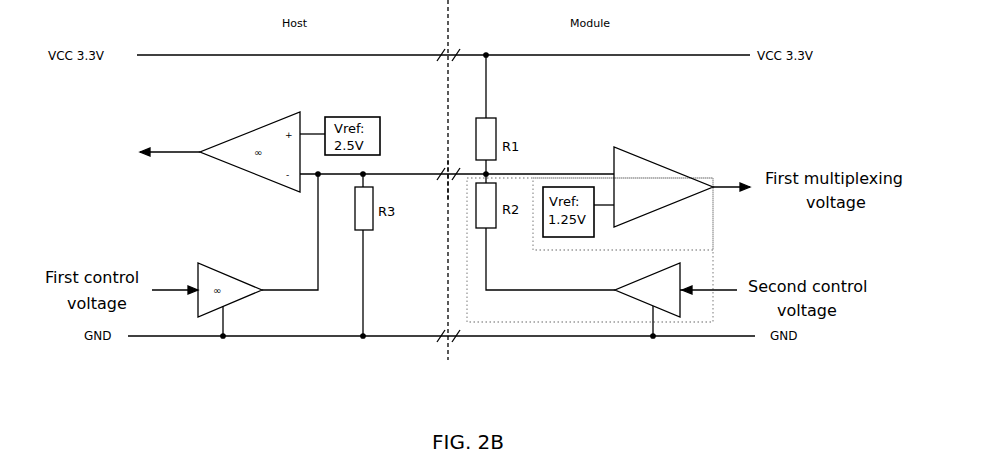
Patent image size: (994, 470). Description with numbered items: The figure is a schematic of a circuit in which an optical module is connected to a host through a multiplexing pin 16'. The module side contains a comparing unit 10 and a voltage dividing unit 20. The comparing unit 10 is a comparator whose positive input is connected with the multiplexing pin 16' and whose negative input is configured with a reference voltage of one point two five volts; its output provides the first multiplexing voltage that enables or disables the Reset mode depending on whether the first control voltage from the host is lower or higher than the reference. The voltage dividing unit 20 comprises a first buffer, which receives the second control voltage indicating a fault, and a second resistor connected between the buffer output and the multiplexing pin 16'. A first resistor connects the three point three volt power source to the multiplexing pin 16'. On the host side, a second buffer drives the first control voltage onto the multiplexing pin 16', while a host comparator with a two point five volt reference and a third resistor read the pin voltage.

The comparing unit 10 is at (662, 155).
The voltage dividing unit 20 is at (708, 260).
The multiplexing pin 16' is at (417, 219).